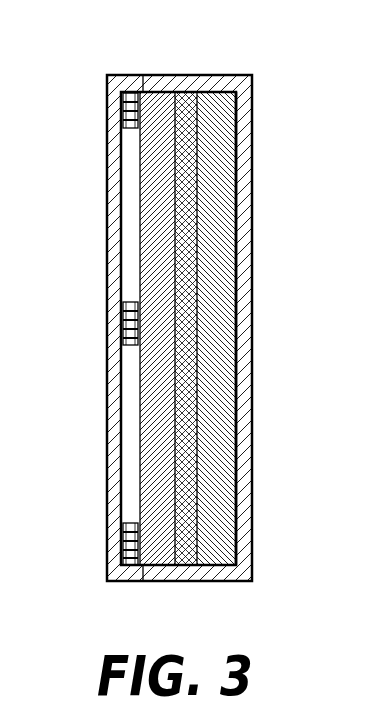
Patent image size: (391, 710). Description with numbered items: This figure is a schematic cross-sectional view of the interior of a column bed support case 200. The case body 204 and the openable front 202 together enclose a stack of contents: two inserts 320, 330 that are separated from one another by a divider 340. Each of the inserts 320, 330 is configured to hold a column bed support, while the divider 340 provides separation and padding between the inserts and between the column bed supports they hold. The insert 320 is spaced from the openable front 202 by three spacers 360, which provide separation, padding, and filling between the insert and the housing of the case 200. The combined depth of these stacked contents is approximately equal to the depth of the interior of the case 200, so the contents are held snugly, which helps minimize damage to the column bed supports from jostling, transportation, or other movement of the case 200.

The case 200 is at (196, 327).
The openable front 202 is at (114, 235).
The case body 204 is at (252, 225).
The insert 320 is at (159, 104).
The insert 330 is at (217, 105).
The divider 340 is at (186, 545).
The spacers 360 is at (125, 103).